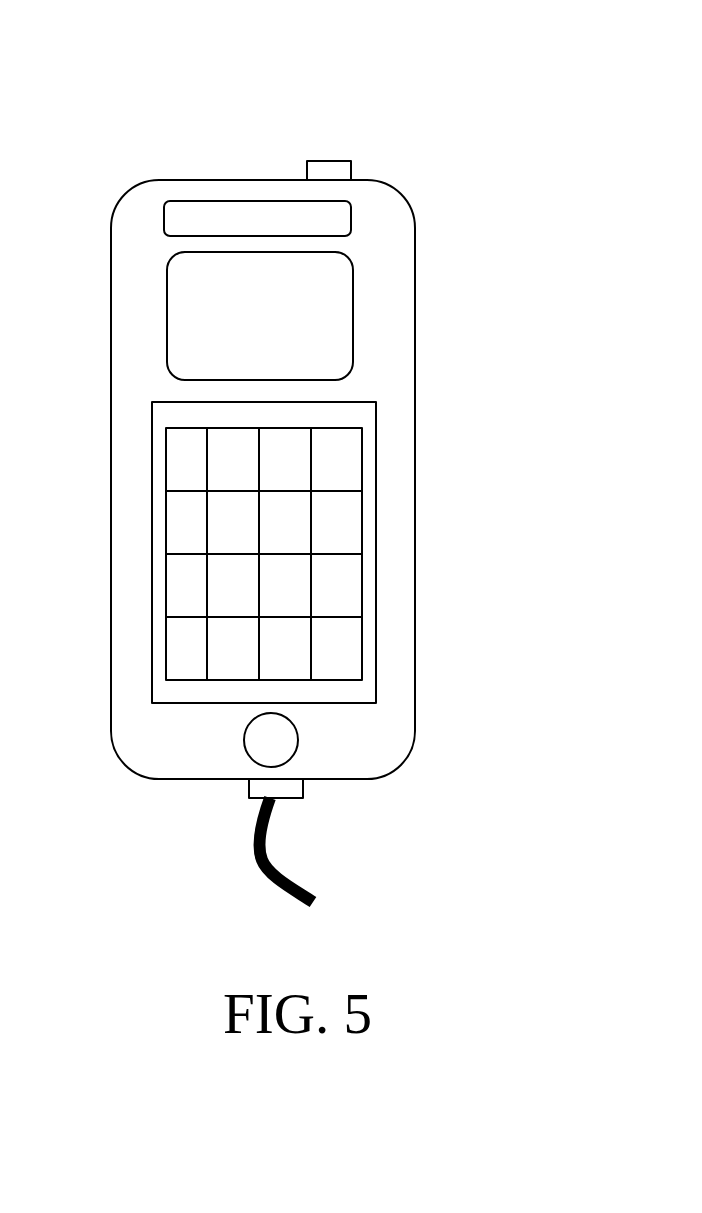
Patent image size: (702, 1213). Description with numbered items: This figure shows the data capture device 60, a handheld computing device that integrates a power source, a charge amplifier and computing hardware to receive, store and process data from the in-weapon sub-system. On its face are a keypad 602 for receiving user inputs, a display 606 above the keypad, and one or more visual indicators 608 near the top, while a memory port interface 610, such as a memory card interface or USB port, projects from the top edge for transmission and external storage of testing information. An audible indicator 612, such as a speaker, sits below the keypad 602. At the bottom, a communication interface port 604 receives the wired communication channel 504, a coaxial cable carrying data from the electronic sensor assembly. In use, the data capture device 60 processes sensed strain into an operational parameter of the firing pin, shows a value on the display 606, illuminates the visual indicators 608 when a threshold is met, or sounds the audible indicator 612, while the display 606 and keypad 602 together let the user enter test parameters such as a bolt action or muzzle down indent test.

The data capture device 60 is at (163, 180).
The memory port interface 610 is at (347, 161).
The visual indicators 608 is at (165, 218).
The display 606 is at (167, 343).
The keypad 602 is at (376, 488).
The audible indicator 612 is at (299, 740).
The communication interface port 604 is at (303, 795).
The wired communication channel 504 is at (254, 839).